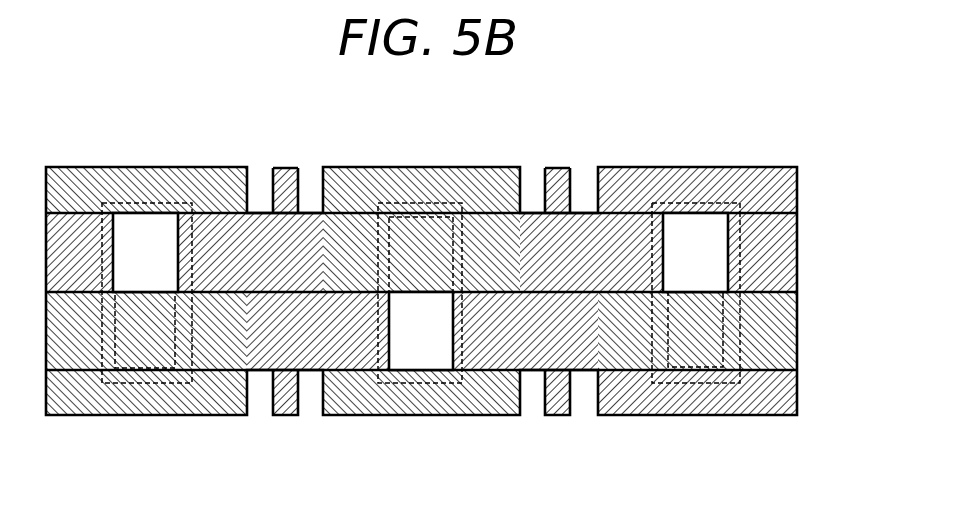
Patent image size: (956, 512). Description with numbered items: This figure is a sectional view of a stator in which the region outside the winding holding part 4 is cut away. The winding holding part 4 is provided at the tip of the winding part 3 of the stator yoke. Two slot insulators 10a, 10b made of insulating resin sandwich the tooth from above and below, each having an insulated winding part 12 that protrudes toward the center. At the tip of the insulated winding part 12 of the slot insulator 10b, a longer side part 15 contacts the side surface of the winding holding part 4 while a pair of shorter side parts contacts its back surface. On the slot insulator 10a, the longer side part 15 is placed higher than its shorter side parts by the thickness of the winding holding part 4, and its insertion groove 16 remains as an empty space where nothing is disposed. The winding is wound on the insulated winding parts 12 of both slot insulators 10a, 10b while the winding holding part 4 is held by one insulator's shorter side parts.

The winding part 3 is at (753, 370).
The winding holding part 4 is at (778, 355).
The slot insulator 10a is at (799, 240).
The slot insulator 10b is at (799, 305).
The insulated winding part 12 is at (702, 198).
The longer side part 15 is at (797, 181).
The insertion groove 16 is at (687, 237).